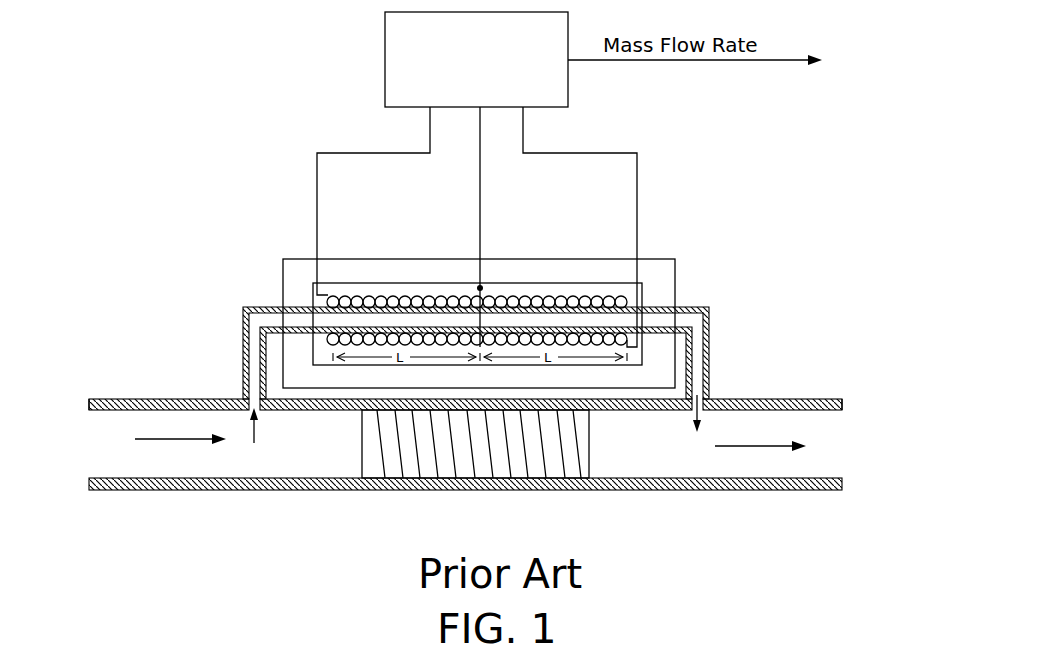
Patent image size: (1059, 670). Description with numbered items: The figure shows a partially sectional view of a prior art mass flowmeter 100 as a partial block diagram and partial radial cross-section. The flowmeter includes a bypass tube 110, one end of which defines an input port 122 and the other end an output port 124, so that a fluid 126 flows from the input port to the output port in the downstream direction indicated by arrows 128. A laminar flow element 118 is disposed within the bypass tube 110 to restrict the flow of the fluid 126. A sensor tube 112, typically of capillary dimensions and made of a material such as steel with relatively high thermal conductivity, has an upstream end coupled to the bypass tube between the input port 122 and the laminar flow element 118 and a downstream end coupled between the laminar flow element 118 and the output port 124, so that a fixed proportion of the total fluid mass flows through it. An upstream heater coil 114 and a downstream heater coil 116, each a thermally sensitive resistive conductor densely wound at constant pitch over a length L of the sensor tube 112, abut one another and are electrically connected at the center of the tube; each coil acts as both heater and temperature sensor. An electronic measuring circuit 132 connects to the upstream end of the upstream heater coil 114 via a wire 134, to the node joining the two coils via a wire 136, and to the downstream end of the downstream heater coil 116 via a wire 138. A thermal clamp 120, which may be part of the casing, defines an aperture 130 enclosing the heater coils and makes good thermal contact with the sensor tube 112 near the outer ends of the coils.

The mass flowmeter 100 is at (333, 542).
The bypass tube 110 is at (667, 492).
The sensor tube 112 is at (712, 337).
The upstream heater coil 114 is at (365, 295).
The downstream heater coil 116 is at (592, 297).
The laminar flow element 118 is at (589, 466).
The thermal clamp 120 is at (660, 258).
The input port 122 is at (90, 443).
The output port 124 is at (842, 450).
The fluid 126 is at (331, 452).
The arrows 128 is at (175, 440).
The aperture 130 is at (440, 283).
The electronic measuring circuit 132 is at (494, 70).
The wire 134 is at (317, 203).
The wire 136 is at (480, 223).
The wire 138 is at (637, 178).